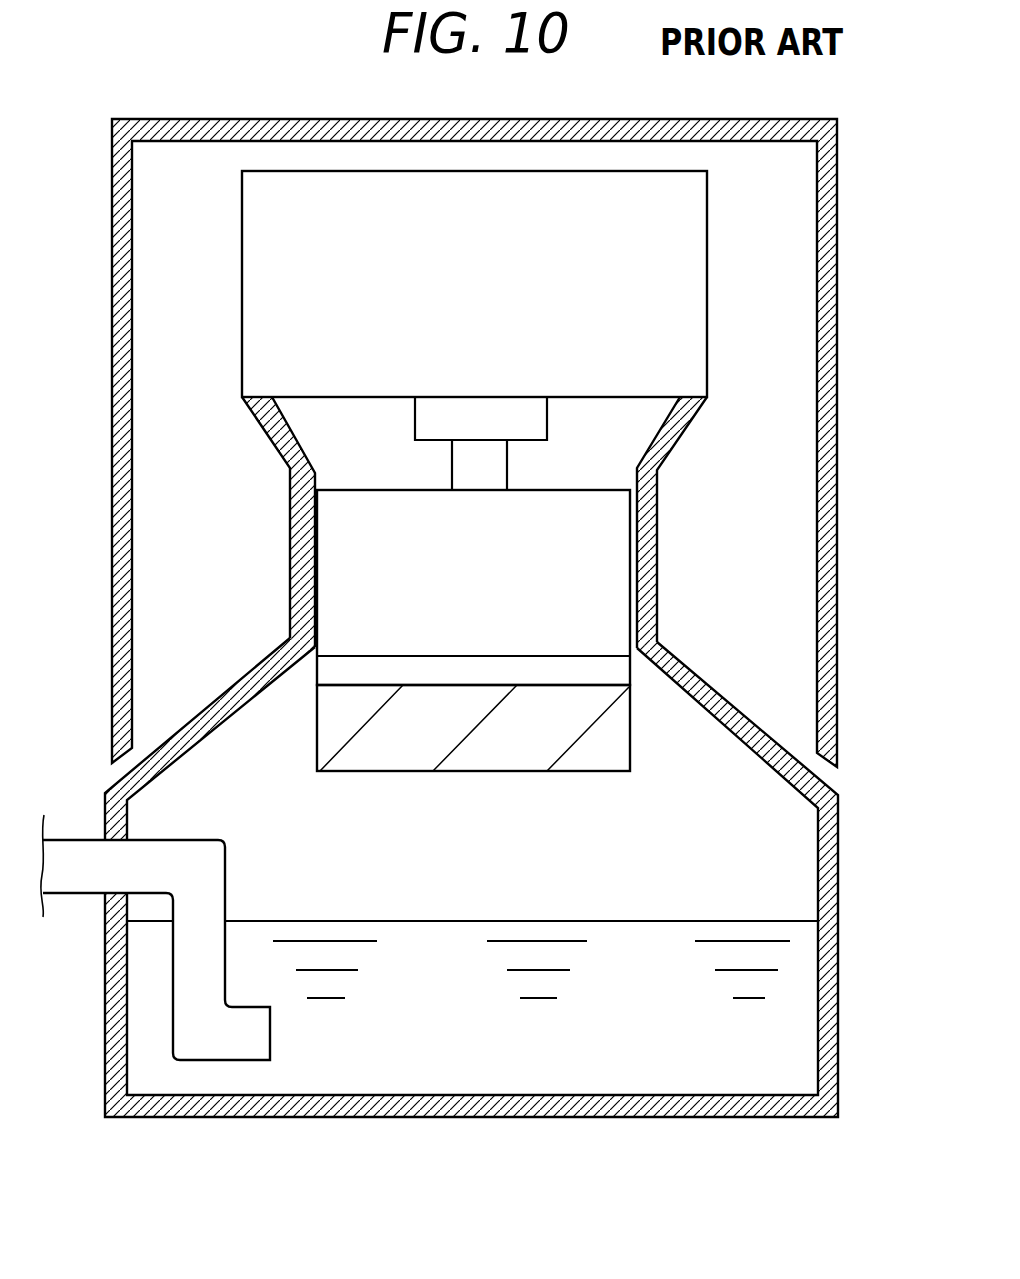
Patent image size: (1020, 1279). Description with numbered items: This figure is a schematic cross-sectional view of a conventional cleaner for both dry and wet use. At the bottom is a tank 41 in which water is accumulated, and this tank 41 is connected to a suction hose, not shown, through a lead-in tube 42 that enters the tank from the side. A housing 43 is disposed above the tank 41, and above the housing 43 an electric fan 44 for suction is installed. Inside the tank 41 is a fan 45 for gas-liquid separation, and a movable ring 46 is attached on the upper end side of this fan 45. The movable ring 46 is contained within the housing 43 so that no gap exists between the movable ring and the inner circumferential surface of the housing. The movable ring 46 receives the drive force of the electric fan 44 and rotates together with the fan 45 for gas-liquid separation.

The tank 41 is at (828, 840).
The lead-in tube 42 is at (73, 897).
The housing 43 is at (645, 552).
The electric fan 44 is at (497, 320).
The fan for gas-liquid separation 45 is at (488, 771).
The movable ring 46 is at (573, 605).